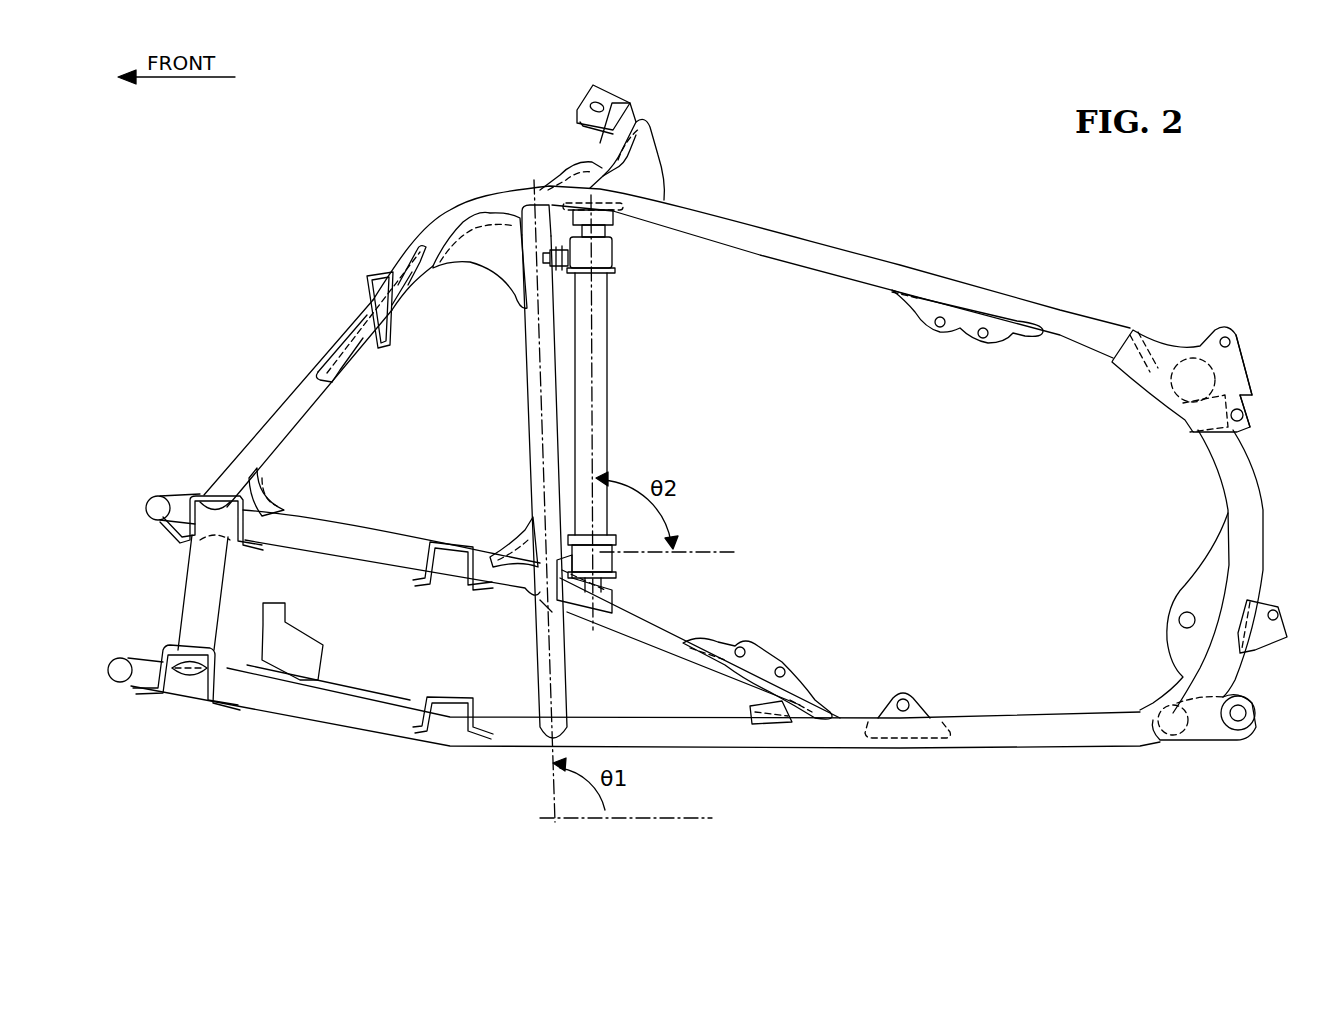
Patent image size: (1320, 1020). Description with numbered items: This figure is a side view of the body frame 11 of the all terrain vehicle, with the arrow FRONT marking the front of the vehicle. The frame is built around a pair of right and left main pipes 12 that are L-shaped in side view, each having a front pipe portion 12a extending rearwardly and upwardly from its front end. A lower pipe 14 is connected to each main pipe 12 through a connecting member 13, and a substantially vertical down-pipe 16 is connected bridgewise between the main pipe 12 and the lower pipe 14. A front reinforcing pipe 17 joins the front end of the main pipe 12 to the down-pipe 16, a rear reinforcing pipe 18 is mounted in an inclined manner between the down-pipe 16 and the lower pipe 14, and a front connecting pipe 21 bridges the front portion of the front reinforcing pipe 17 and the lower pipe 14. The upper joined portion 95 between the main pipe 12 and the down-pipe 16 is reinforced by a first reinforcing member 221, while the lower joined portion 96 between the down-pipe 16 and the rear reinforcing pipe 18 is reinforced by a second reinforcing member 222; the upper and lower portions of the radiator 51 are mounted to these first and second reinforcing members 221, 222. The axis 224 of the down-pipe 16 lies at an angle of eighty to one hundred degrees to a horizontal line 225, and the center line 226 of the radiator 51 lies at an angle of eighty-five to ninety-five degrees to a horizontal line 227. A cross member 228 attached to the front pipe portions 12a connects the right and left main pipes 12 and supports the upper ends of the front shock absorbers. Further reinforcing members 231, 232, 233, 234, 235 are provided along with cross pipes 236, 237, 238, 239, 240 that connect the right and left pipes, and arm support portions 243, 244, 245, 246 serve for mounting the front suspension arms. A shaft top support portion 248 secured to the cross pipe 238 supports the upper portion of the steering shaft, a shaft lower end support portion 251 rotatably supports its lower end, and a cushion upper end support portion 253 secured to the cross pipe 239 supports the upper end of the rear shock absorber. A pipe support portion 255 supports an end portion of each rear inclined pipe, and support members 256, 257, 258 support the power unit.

The body frame 11 is at (362, 158).
The main pipe 12 is at (826, 246).
The front pipe portion 12a is at (292, 394).
The connecting member 13 is at (1149, 374).
The lower pipe 14 is at (1040, 740).
The down-pipe 16 is at (535, 384).
The front reinforcing pipe 17 is at (370, 533).
The rear reinforcing pipe 18 is at (669, 638).
The front connecting pipe 21 is at (188, 578).
The radiator 51 is at (611, 351).
The upper joined portion 95 is at (525, 210).
The lower joined portion 96 is at (546, 609).
The first reinforcing member 221 is at (487, 264).
The second reinforcing member 222 is at (613, 598).
The axis 224 is at (541, 453).
The horizontal line 225 is at (682, 818).
The center line 226 is at (598, 385).
The horizontal line 227 is at (703, 550).
The cross member 228 is at (364, 280).
The reinforcing member 231 is at (264, 497).
The reinforcing member 232 is at (508, 548).
The reinforcing member 233 is at (565, 176).
The reinforcing member 234 is at (644, 180).
The reinforcing member 235 is at (752, 713).
The cross pipe 236 is at (152, 498).
The cross pipe 237 is at (112, 684).
The cross pipe 238 is at (634, 117).
The cross pipe 239 is at (1185, 358).
The cross pipe 240 is at (1163, 735).
The arm support portion 243 is at (183, 503).
The arm support portion 244 is at (421, 577).
The arm support portion 245 is at (165, 660).
The arm support portion 246 is at (456, 690).
The shaft top support portion 248 is at (580, 106).
The shaft lower end support portion 251 is at (294, 641).
The cushion upper end support portion 253 is at (1246, 406).
The pipe support portion 255 is at (1262, 635).
The support member 256 is at (961, 334).
The support member 257 is at (762, 655).
The support member 258 is at (912, 692).